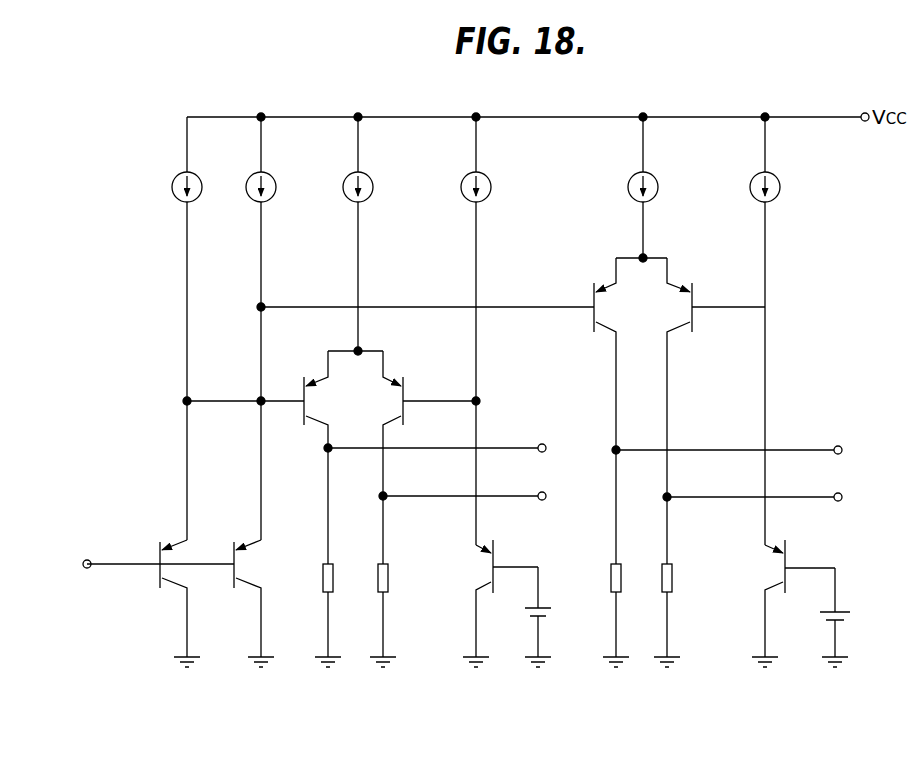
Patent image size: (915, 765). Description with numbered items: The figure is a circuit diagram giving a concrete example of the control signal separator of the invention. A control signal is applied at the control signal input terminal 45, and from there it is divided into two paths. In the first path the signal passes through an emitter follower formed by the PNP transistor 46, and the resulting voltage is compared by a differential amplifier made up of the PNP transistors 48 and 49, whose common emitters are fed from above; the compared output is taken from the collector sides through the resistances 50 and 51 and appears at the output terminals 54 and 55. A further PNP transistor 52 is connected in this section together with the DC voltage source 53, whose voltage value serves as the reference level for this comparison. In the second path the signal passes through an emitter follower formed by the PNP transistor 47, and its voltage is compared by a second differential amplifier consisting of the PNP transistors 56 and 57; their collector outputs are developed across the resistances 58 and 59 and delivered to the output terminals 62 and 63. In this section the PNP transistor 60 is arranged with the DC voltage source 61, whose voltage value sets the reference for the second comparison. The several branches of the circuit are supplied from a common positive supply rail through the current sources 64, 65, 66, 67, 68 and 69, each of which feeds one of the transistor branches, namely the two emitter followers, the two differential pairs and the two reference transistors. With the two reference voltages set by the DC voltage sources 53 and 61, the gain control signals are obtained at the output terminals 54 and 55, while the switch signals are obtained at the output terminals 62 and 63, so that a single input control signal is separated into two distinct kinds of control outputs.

The control signal input terminal 45 is at (87, 560).
The PNP transistor 46 is at (169, 541).
The PNP transistor 47 is at (244, 541).
The PNP transistor 48 is at (312, 372).
The PNP transistor 49 is at (393, 372).
The resistance 50 is at (322, 584).
The resistance 51 is at (388, 574).
The PNP transistor 52 is at (480, 572).
The DC voltage source 53 is at (526, 612).
The output terminal 54 is at (546, 446).
The output terminal 55 is at (546, 494).
The PNP transistor 56 is at (605, 328).
The PNP transistor 57 is at (681, 328).
The resistance 58 is at (613, 590).
The resistance 59 is at (673, 582).
The PNP transistor 60 is at (770, 573).
The DC voltage source 61 is at (822, 618).
The output terminal 62 is at (842, 452).
The output terminal 63 is at (842, 499).
The current source 64 is at (178, 200).
The current source 65 is at (256, 203).
The current source 66 is at (352, 203).
The current source 67 is at (470, 203).
The current source 68 is at (636, 203).
The current source 69 is at (758, 203).